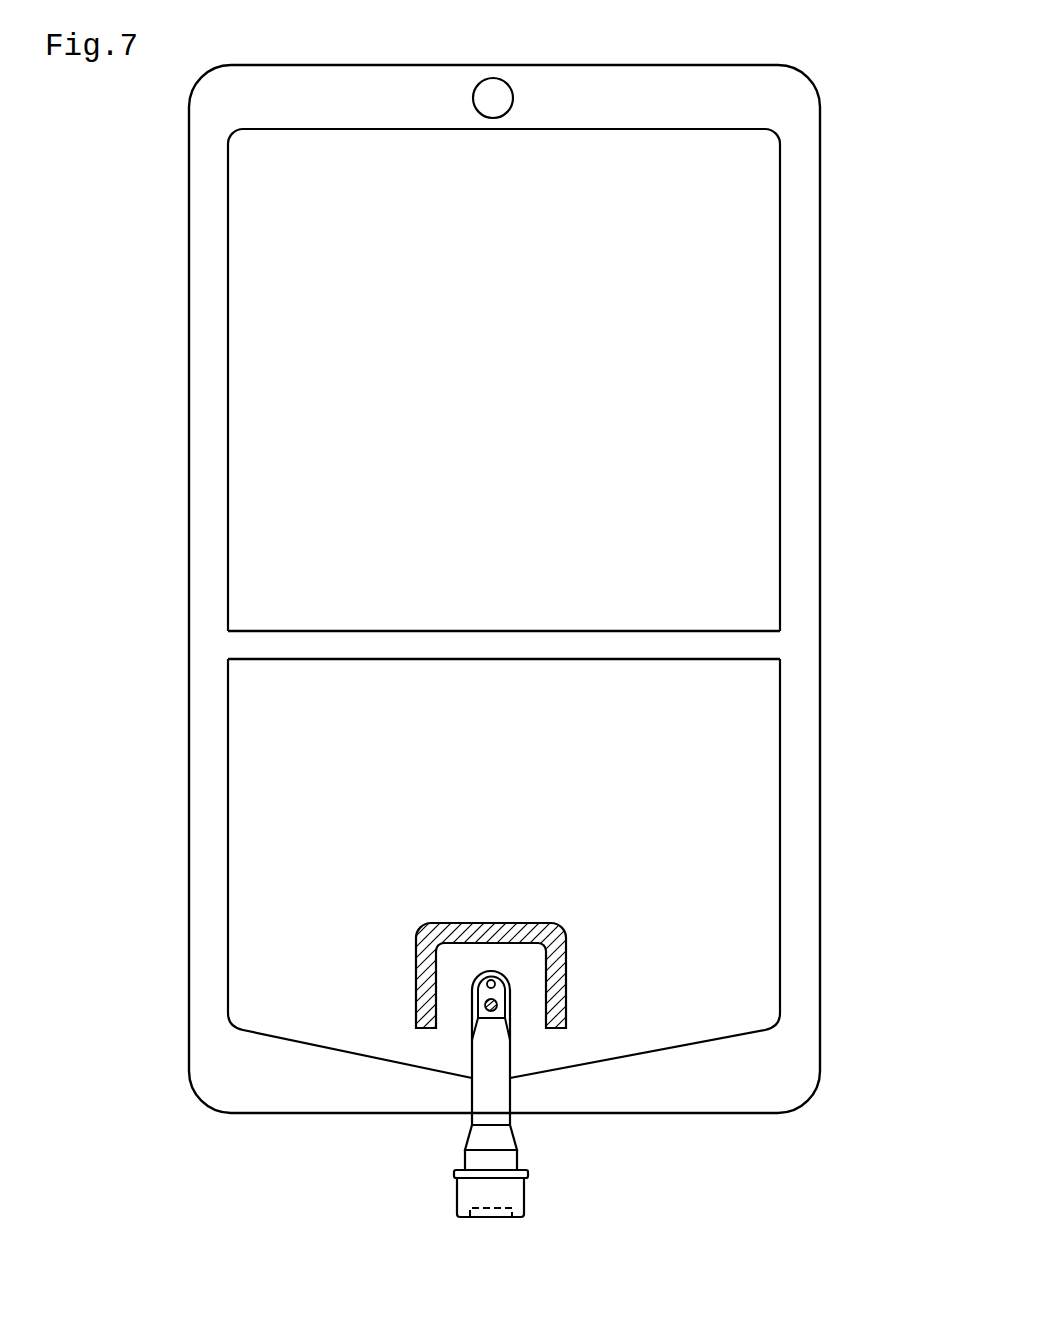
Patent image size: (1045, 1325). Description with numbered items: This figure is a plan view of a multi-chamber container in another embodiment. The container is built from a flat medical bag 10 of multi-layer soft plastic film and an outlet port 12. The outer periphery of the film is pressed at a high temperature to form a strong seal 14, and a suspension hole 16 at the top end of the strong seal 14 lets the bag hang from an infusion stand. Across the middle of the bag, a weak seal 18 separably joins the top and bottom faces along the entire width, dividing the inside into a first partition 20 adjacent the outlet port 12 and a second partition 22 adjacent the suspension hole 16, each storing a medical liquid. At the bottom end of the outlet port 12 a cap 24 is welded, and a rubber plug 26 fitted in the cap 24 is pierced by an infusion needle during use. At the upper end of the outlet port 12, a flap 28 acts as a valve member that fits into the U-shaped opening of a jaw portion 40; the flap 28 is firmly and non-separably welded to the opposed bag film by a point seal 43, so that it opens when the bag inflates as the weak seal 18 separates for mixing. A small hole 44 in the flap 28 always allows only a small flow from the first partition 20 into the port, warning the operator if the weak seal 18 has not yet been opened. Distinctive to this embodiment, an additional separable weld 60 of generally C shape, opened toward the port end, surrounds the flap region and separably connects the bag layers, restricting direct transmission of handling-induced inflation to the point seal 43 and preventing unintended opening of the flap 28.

The medical bag 10 is at (566, 633).
The outlet port 12 is at (472, 1119).
The strong seal 14 is at (812, 830).
The suspension hole 16 is at (495, 92).
The weak seal 18 is at (611, 638).
The first partition 20 is at (506, 813).
The second partition 22 is at (511, 423).
The cap 24 is at (520, 1192).
The rubber plug 26 is at (487, 1210).
The flap 28 is at (500, 997).
The jaw portion 40 is at (490, 984).
The point seal 43 is at (483, 1005).
The small hole 44 is at (511, 987).
The additional separable weld 60 is at (528, 924).